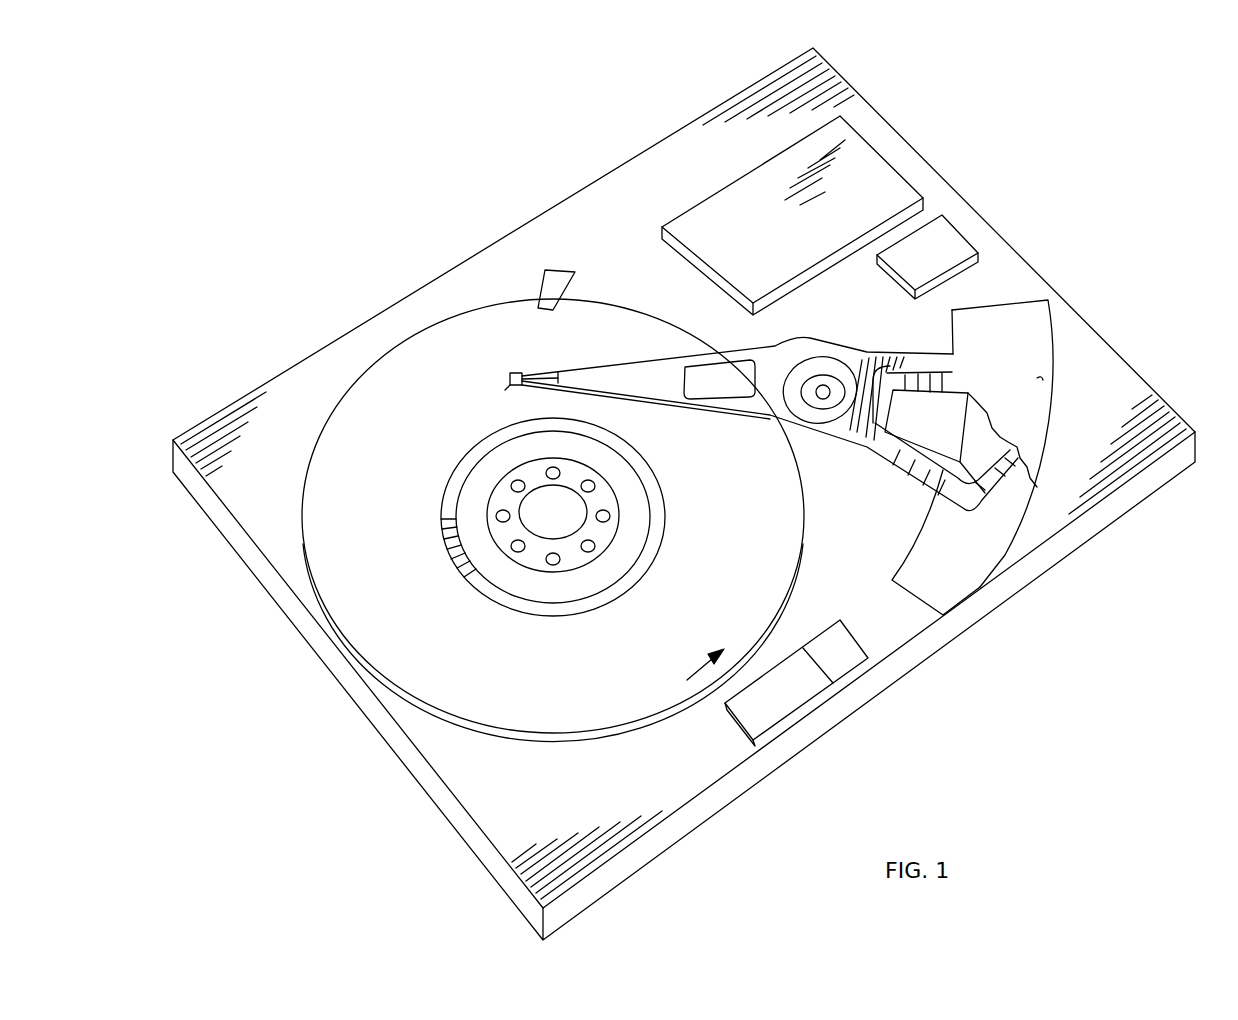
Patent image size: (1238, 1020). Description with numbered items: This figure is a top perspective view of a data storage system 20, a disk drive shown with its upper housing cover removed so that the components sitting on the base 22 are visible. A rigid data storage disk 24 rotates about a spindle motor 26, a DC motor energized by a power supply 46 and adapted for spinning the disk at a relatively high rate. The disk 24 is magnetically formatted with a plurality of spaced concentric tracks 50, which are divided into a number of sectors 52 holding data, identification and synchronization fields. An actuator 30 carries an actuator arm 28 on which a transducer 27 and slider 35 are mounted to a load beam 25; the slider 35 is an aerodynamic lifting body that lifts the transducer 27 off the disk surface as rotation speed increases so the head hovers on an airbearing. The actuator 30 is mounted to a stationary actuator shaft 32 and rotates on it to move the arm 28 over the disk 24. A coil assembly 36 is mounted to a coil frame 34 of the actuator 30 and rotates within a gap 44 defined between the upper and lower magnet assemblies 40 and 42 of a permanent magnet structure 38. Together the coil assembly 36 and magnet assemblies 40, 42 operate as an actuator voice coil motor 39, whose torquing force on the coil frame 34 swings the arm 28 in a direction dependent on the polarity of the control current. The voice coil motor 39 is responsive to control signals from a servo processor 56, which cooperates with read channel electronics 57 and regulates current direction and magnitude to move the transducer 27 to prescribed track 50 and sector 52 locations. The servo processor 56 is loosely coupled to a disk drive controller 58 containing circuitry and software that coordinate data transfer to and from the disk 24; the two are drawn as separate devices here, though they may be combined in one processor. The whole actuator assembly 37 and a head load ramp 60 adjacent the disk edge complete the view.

The data storage system 20 is at (1003, 170).
The base plate 22 is at (857, 693).
The data storage disk 24 is at (364, 503).
The load beam 25 is at (535, 381).
The spindle motor 26 is at (572, 537).
The transducer 27 is at (508, 387).
The actuator arm 28 is at (656, 385).
The actuator 30 is at (838, 437).
The actuator shaft 32 is at (823, 385).
The coil frame 34 is at (877, 356).
The slider 35 is at (510, 374).
The coil assembly 36 is at (900, 397).
The actuator assembly 37 is at (816, 448).
The permanent magnet structure 38 is at (1054, 333).
The actuator voice coil motor 39 is at (940, 505).
The upper magnet assembly 40 is at (1043, 380).
The lower magnet assembly 42 is at (916, 576).
The gap 44 is at (1020, 477).
The power supply 46 is at (761, 253).
The track 50 is at (460, 466).
The sector 52 is at (444, 548).
The servo processor 56 is at (808, 691).
The read channel electronics 57 is at (848, 665).
The disk drive controller 58 is at (943, 263).
The head load ramp 60 is at (563, 268).